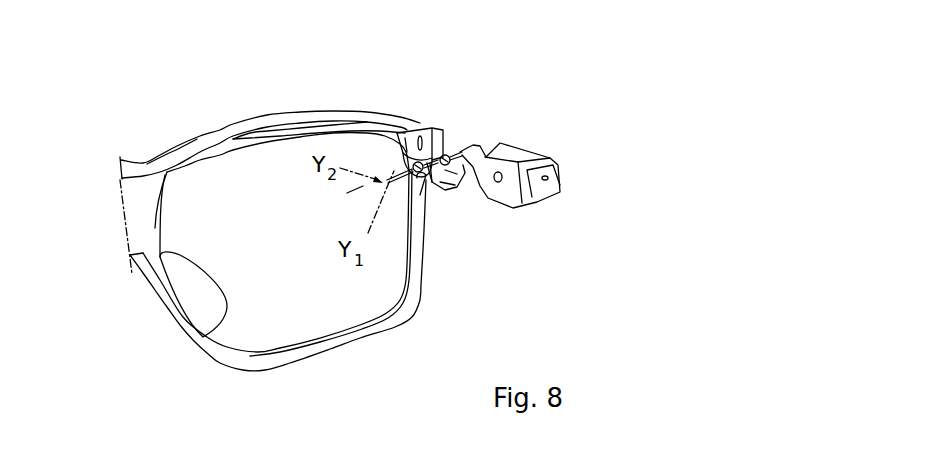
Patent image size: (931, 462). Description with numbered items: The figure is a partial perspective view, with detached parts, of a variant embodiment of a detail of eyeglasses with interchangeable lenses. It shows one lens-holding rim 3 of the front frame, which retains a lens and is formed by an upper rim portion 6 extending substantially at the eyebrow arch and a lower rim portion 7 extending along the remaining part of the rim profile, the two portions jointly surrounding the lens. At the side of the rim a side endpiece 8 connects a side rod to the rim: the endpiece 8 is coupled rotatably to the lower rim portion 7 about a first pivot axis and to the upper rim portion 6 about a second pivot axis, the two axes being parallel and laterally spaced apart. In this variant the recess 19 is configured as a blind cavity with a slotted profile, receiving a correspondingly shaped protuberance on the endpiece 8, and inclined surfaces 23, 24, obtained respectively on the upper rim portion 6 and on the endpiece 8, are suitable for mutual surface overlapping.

The lens-holding rim 3 is at (208, 112).
The upper rim portion 6 is at (352, 117).
The lower rim portion 7 is at (417, 258).
The side endpiece 8 is at (538, 142).
The recess 19 is at (401, 133).
The inclined surface 23 is at (447, 154).
The inclined surface 24 is at (492, 142).